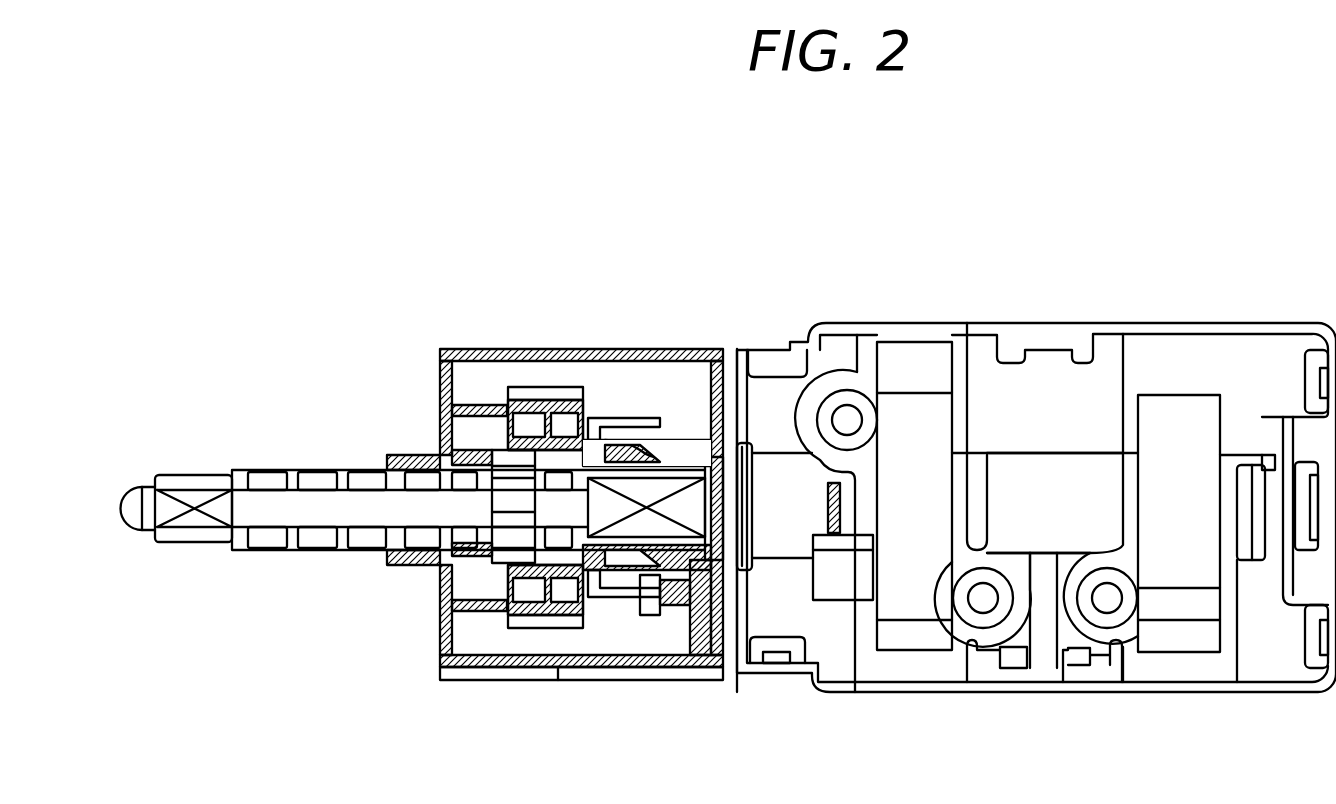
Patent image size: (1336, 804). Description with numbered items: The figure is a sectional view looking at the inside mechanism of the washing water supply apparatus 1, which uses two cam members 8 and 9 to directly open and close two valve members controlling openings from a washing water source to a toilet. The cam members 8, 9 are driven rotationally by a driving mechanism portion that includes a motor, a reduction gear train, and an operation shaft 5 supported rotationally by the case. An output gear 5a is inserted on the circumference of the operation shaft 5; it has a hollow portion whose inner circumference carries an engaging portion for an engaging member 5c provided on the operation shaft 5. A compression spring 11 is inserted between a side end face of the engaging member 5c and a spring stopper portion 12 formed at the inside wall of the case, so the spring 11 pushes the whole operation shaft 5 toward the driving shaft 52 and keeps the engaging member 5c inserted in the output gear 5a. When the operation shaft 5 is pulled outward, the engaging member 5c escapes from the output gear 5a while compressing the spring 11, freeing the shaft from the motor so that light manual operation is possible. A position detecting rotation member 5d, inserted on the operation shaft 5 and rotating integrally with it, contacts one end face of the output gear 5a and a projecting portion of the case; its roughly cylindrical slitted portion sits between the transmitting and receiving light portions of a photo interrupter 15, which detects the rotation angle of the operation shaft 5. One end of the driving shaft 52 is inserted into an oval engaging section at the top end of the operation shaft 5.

The washing water supply apparatus 1 is at (757, 274).
The operation shaft 5 is at (325, 465).
The output gear 5a is at (548, 395).
The engaging member 5c is at (513, 476).
The position detecting rotation member 5d is at (636, 425).
The cam member 8 is at (915, 370).
The cam member 9 is at (1190, 475).
The compression spring 11 is at (485, 565).
The spring stopper portion 12 is at (445, 590).
The photo interrupter 15 is at (630, 600).
The driving shaft 52 is at (1052, 480).